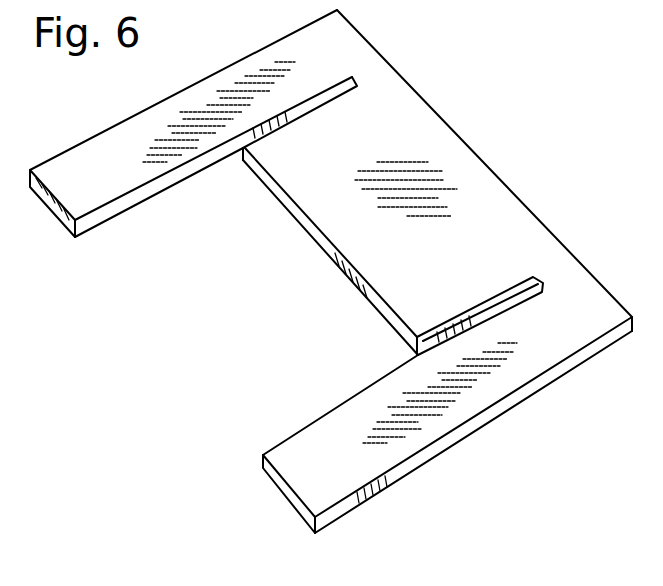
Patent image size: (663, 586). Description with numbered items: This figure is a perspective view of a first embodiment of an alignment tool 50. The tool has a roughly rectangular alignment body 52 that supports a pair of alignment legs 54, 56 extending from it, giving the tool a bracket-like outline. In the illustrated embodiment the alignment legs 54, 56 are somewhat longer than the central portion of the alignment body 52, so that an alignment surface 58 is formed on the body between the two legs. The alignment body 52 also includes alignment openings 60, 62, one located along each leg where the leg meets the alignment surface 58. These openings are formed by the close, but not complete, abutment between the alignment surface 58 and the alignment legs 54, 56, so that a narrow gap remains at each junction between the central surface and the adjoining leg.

The alignment tool 50 is at (517, 92).
The alignment body 52 is at (478, 185).
The alignment leg 54 is at (537, 360).
The alignment leg 56 is at (175, 115).
The alignment surface 58 is at (317, 237).
The alignment opening 60 is at (503, 300).
The alignment opening 62 is at (313, 107).